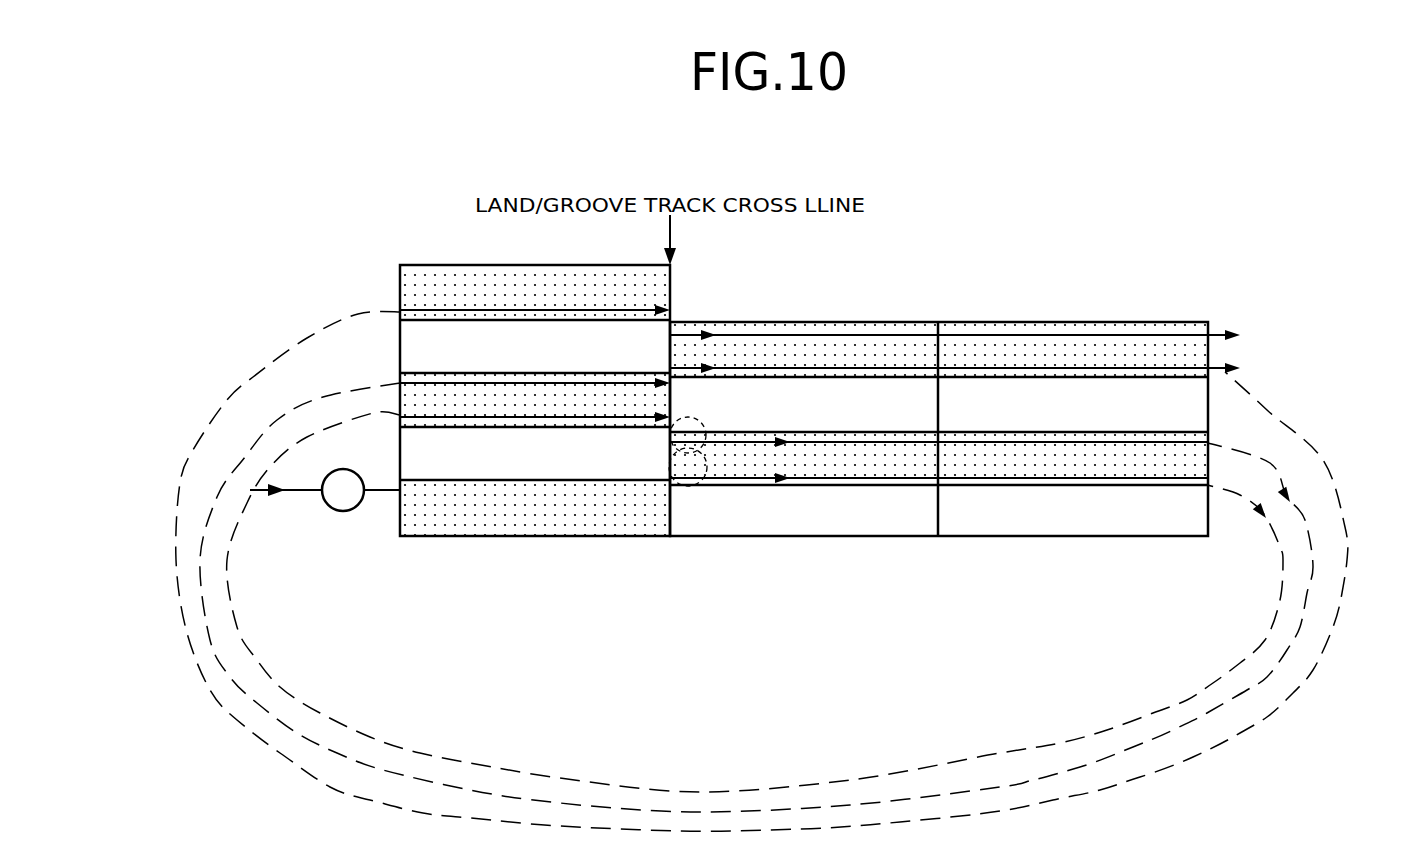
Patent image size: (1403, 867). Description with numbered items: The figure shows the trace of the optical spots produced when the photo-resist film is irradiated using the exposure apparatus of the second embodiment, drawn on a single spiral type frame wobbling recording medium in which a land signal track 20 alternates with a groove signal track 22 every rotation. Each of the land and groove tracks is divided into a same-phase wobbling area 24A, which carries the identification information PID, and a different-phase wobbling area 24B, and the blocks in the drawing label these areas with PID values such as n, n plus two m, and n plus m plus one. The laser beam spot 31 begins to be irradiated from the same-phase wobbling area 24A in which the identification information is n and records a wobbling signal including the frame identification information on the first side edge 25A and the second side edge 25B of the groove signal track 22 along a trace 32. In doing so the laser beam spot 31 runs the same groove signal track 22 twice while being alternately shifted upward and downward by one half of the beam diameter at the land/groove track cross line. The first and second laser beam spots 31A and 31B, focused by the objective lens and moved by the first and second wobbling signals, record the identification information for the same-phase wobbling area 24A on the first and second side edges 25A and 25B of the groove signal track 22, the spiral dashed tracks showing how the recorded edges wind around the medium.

The land signal track 20 is at (757, 400).
The groove signal track 22 is at (1208, 322).
The same-phase wobbling area 24A is at (804, 400).
The different-phase wobbling area 24B is at (804, 428).
The first side edge 25A is at (1185, 492).
The second side edge 25B is at (420, 480).
The laser beam spot 31 is at (343, 511).
The first laser beam spot 31A is at (668, 458).
The second laser beam spot 31B is at (682, 488).
The trace 32 is at (885, 475).